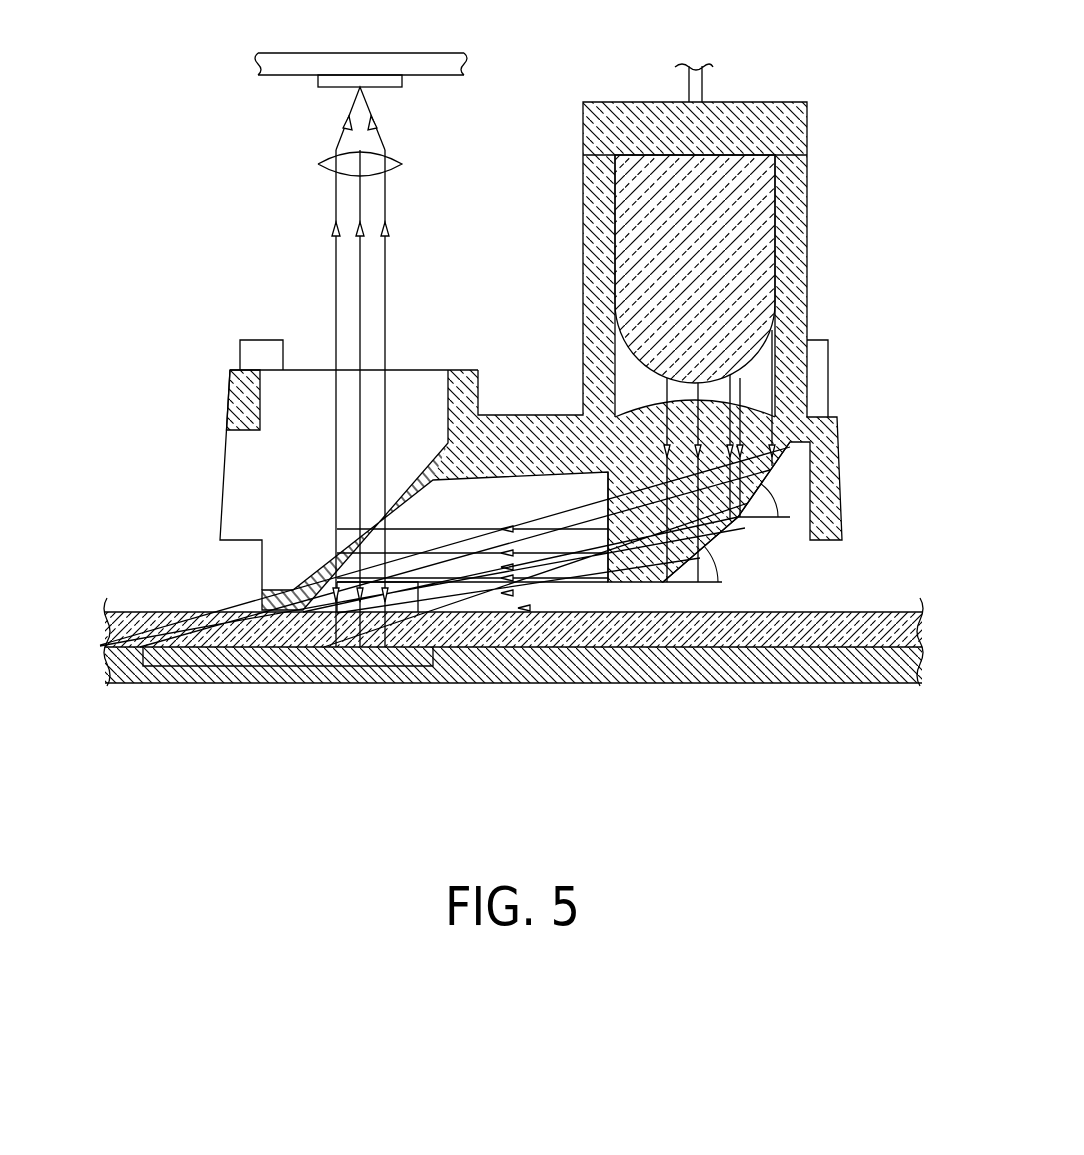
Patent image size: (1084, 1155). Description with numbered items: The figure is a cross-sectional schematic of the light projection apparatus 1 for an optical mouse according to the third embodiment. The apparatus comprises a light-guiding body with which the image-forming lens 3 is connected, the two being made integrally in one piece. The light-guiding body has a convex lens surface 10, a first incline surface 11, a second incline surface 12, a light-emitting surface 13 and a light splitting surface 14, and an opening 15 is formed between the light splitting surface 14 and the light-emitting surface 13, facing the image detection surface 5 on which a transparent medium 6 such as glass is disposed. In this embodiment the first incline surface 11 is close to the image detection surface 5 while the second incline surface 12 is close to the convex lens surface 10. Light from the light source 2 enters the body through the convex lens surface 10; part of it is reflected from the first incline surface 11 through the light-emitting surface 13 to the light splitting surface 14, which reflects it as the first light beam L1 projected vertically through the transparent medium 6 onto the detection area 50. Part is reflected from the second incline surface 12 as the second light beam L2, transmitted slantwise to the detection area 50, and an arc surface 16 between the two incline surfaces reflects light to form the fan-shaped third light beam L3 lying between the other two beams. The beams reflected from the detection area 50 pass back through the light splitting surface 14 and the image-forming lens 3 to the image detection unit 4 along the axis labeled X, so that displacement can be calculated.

The light projection apparatus 1 is at (733, 407).
The light source 2 is at (730, 212).
The image-forming lens 3 is at (356, 160).
The image detection unit 4 is at (338, 80).
The image detection surface 5 is at (233, 645).
The transparent medium 6 is at (180, 645).
The convex lens surface 10 is at (717, 393).
The first incline surface 11 is at (705, 545).
The second incline surface 12 is at (830, 540).
The light-emitting surface 13 is at (607, 533).
The light splitting surface 14 is at (333, 648).
The opening 15 is at (525, 608).
The arc surface 16 is at (742, 520).
The detection area 50 is at (300, 660).
The first light beam L1 is at (360, 600).
The second light beam L2 is at (480, 600).
The third light beam L3 is at (473, 648).
The optical axis of imaging light X is at (360, 278).